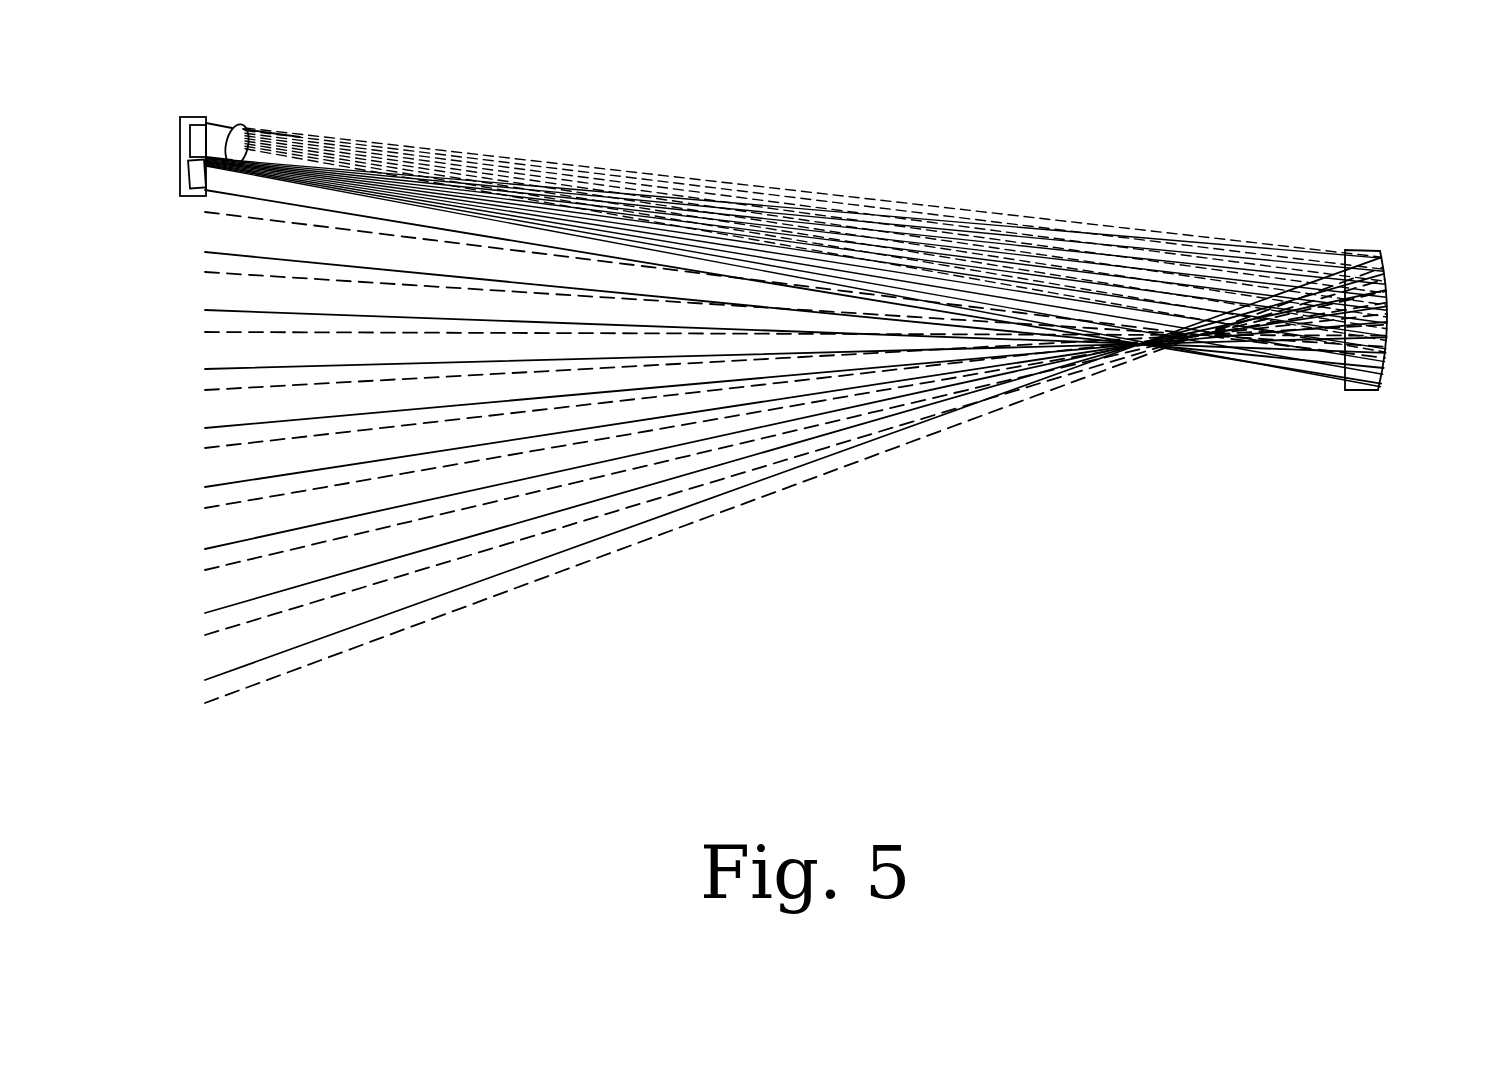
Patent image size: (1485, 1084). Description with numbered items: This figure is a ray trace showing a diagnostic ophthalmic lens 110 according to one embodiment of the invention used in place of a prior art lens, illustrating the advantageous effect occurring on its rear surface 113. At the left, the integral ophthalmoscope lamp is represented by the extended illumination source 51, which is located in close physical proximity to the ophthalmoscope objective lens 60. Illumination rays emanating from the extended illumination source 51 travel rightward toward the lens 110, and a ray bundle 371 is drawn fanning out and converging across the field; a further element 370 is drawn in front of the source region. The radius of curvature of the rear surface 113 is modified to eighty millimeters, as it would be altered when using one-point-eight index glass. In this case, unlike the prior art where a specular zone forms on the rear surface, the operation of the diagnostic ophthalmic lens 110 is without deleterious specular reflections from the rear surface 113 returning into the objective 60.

The extended illumination source 51 is at (190, 146).
The ophthalmoscope objective lens 60 is at (194, 190).
The lens 370 is at (255, 150).
The light rays 371 is at (225, 194).
The diagnostic ophthalmic lens 110 is at (1414, 287).
The rear surface 113 is at (1386, 281).